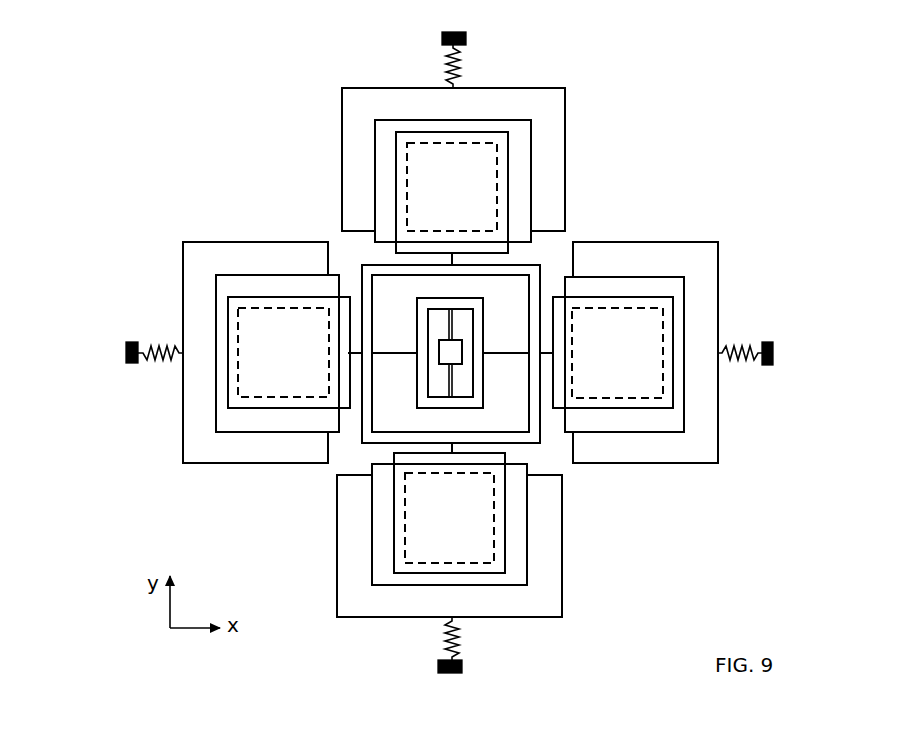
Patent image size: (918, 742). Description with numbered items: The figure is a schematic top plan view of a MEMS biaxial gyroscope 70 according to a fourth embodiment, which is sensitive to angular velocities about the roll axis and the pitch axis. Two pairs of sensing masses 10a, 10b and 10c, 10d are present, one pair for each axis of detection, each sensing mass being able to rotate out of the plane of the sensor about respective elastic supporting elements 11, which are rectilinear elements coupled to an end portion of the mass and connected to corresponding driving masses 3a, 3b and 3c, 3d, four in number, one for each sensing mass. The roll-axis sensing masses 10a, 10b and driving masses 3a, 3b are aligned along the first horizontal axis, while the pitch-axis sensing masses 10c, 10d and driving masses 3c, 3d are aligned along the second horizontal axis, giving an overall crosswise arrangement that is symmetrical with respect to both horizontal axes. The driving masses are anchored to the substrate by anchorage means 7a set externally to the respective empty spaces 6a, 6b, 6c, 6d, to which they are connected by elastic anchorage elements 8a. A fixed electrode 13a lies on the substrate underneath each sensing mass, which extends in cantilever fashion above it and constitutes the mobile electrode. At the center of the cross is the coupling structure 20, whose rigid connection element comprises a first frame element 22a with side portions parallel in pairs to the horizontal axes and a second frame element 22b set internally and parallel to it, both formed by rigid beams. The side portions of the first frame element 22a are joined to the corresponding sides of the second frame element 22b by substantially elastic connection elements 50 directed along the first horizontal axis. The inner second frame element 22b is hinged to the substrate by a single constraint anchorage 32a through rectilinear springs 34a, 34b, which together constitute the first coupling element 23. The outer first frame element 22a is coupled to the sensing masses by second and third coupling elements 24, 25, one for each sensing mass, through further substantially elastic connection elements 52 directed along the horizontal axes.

The MEMS biaxial gyroscope 70 is at (190, 138).
The driving mass 3a is at (207, 450).
The driving mass 3b is at (702, 453).
The driving mass 3c is at (552, 108).
The driving mass 3d is at (548, 600).
The empty space 6a is at (251, 425).
The empty space 6b is at (648, 426).
The empty space 6c is at (392, 216).
The empty space 6d is at (518, 498).
The anchorage means 7a is at (467, 34).
The elastic anchorage element 8a is at (465, 62).
The sensing mass 10a is at (258, 305).
The sensing mass 10b is at (667, 398).
The sensing mass 10c is at (500, 155).
The sensing mass 10d is at (400, 533).
The elastic supporting element 11 is at (387, 130).
The fixed electrode 13a is at (393, 168).
The coupling structure 20 is at (550, 260).
The first frame element 22a is at (516, 264).
The second frame element 22b is at (484, 340).
The first coupling element 23 is at (460, 383).
The second coupling element 24 is at (393, 248).
The third coupling element 25 is at (553, 413).
The constraint anchorage 32a is at (455, 349).
The rectilinear spring 34a is at (450, 320).
The rectilinear spring 34b is at (450, 385).
The elastic connection element 50 is at (385, 352).
The connection element 52 is at (351, 410).